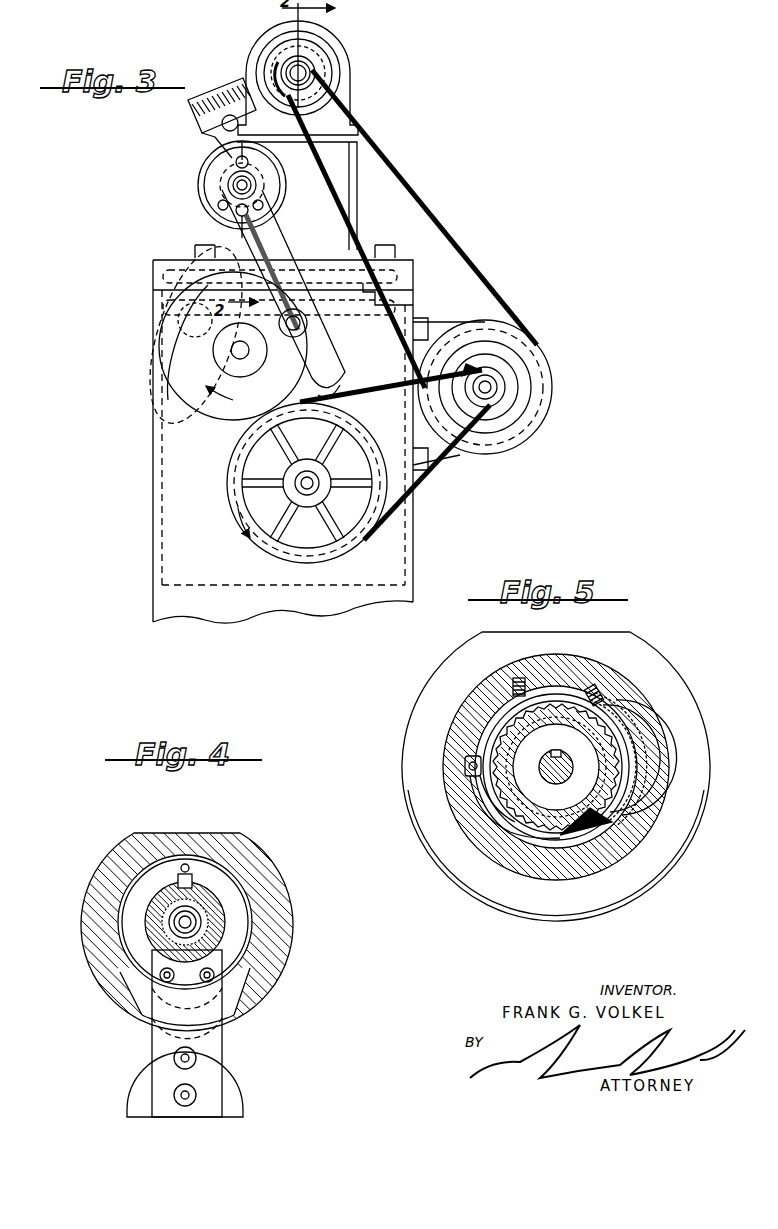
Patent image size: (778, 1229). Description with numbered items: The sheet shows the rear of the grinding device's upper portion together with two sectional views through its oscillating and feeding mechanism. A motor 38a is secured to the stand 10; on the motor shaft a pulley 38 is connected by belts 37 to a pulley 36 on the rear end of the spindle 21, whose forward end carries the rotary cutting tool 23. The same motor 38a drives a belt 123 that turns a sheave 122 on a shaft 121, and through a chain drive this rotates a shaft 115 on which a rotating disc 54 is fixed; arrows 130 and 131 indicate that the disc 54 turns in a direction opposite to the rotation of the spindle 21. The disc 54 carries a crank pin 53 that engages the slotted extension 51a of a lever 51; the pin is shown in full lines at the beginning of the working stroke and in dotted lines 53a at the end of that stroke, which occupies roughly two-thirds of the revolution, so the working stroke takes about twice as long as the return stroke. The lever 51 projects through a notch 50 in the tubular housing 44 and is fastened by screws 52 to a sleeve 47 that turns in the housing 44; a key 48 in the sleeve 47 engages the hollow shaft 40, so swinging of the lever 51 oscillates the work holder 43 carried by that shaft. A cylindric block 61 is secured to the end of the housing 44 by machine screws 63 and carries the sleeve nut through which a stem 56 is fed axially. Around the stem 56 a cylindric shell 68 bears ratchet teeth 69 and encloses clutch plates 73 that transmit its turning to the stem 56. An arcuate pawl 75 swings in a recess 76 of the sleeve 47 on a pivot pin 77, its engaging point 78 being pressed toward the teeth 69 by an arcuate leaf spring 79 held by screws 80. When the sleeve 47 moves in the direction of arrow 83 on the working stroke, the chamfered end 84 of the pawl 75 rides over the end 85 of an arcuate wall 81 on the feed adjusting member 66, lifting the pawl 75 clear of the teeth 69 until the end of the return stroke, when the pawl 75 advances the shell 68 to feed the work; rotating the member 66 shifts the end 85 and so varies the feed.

In FIG. 3, the stand 10 is at (405, 545).
In FIG. 3, the spindle 21 is at (307, 72).
In FIG. 3, the rotary cutting tool 23 is at (330, 28).
In FIG. 3, the pulley 36 is at (322, 60).
In FIG. 3, the belts 37 is at (390, 160).
In FIG. 3, the pulley 38 is at (520, 428).
In FIG. 3, the motor 38a is at (553, 404).
In FIG. 4, the hollow shaft 40 is at (172, 915).
In FIG. 3, the work holder 43 is at (200, 119).
In FIG. 4, the tubular housing 44 is at (92, 927).
In FIG. 5, the tubular housing 44 is at (497, 680).
In FIG. 4, the sleeve 47 is at (205, 900).
In FIG. 5, the sleeve 47 is at (590, 745).
In FIG. 4, the key 48 is at (190, 870).
In FIG. 4, the notch 50 is at (230, 980).
In FIG. 3, the lever 51 is at (270, 232).
In FIG. 4, the lever 51 is at (212, 1012).
In FIG. 3, the slotted extension 51a is at (327, 366).
In FIG. 4, the slotted extension 51a is at (240, 1100).
In FIG. 4, the screws 52 is at (162, 983).
In FIG. 3, the crank pin 53 is at (300, 323).
In FIG. 3, the dotted line position of crank pin 53a is at (165, 332).
In FIG. 3, the rotating disc 54 is at (175, 367).
In FIG. 5, the stem 56 is at (556, 790).
In FIG. 3, the cylindric block 61 is at (221, 192).
In FIG. 3, the machine screws 63 is at (218, 206).
In FIG. 5, the feed adjusting member 66 is at (575, 715).
In FIG. 5, the cylindric shell 68 is at (640, 750).
In FIG. 5, the ratchet teeth 69 is at (540, 812).
In FIG. 5, the second set of clutch plates 73 is at (600, 760).
In FIG. 5, the pawl 75 is at (520, 805).
In FIG. 5, the recess 76 is at (490, 742).
In FIG. 5, the pivot pin 77 is at (465, 766).
In FIG. 5, the engaging point 78 is at (480, 780).
In FIG. 5, the arcuate leaf spring 79 is at (625, 790).
In FIG. 5, the screws 80 is at (520, 690).
In FIG. 5, the arcuate wall 81 is at (632, 735).
In FIG. 5, the arrow 83 is at (603, 880).
In FIG. 5, the chamfered end 84 is at (620, 860).
In FIG. 5, the end of arcuate wall 85 is at (605, 806).
In FIG. 3, the shaft 115 is at (232, 352).
In FIG. 3, the shaft 121 is at (300, 478).
In FIG. 3, the sheave 122 is at (275, 520).
In FIG. 3, the belt 123 is at (435, 487).
In FIG. 3, the arrow 130 is at (283, 52).
In FIG. 3, the arrow 131 is at (220, 400).